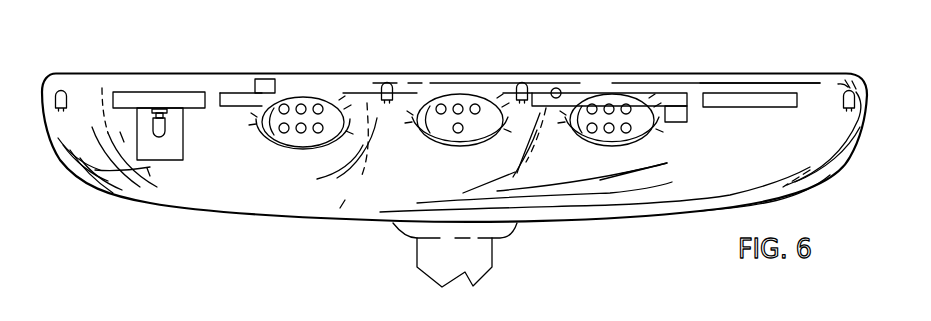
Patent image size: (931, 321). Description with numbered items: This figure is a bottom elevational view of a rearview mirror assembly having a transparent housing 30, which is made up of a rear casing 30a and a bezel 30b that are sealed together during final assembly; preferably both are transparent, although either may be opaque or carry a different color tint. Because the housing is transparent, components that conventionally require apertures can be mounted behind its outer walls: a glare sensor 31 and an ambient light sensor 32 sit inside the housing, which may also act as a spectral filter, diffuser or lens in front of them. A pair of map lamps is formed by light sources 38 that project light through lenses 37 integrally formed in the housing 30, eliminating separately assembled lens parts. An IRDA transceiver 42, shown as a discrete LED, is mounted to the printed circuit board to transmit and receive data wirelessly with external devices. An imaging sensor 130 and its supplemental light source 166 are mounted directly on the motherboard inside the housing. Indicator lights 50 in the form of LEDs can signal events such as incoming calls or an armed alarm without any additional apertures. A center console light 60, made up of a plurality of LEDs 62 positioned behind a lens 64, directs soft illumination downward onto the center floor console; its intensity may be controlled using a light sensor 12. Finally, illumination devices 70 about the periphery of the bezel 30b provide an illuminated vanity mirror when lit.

The light sensor 12 is at (458, 134).
The transparent housing 30 is at (199, 196).
The rear casing 30a is at (828, 150).
The bezel 30b is at (820, 90).
The glare sensor 31 is at (256, 82).
The ambient light sensor 32 is at (684, 117).
The lenses 37 is at (330, 115).
The light sources 38 is at (300, 103).
The IRDA transceiver 42 is at (556, 88).
The indicator lights 50 is at (383, 82).
The center console light 60 is at (418, 153).
The LEDs 62 is at (474, 103).
The lens 64 is at (488, 141).
The illumination devices 70 is at (54, 89).
The imaging sensor 130 is at (133, 117).
The supplemental light source 166 is at (164, 127).